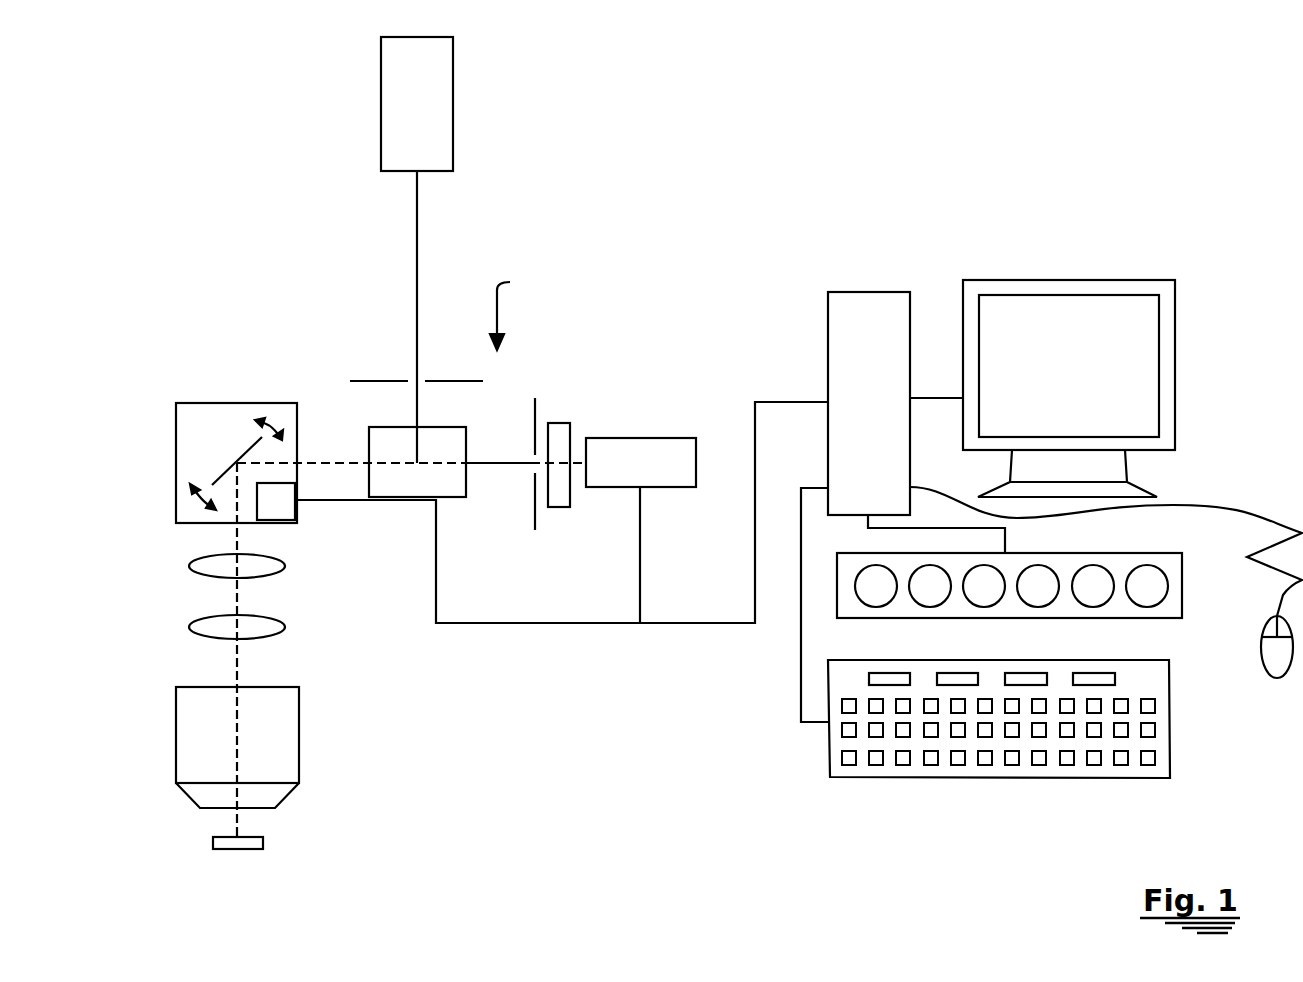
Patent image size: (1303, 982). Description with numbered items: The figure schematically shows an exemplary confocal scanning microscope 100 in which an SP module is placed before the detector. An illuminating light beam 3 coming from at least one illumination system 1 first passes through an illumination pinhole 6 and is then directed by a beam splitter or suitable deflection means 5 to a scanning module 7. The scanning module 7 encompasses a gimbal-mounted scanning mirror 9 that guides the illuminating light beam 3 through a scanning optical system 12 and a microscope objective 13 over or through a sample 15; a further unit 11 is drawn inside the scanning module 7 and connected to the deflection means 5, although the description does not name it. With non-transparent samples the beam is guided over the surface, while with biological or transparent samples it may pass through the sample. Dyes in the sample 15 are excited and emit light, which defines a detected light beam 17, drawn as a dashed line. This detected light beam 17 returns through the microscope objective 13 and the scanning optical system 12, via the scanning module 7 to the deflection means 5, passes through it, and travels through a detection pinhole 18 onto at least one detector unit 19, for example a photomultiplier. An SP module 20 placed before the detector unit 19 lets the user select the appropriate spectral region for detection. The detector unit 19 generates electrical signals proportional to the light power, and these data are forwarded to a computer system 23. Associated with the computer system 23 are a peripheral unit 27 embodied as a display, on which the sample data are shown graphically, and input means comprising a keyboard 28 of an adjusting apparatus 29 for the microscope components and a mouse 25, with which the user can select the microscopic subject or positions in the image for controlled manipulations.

The illumination system 1 is at (440, 80).
The illuminating light beam 3 is at (417, 205).
The confocal scanning microscope 100 is at (526, 307).
The deflection means 5 is at (442, 493).
The illumination pinhole 6 is at (370, 382).
The scanning module 7 is at (200, 426).
The scanning mirror 9 is at (223, 473).
The scanner control 11 is at (283, 507).
The scanning optical system 12 is at (212, 563).
The microscope objective 13 is at (200, 715).
The sample 15 is at (223, 840).
The detected light beam 17 is at (475, 460).
The detection pinhole 18 is at (537, 418).
The detector unit 19 is at (607, 453).
The SP module 20 is at (560, 507).
The computer system 23 is at (837, 338).
The mouse 25 is at (1272, 653).
The peripheral unit 27 is at (1033, 318).
The keyboard 28 is at (1143, 680).
The adjusting apparatus 29 is at (1070, 560).